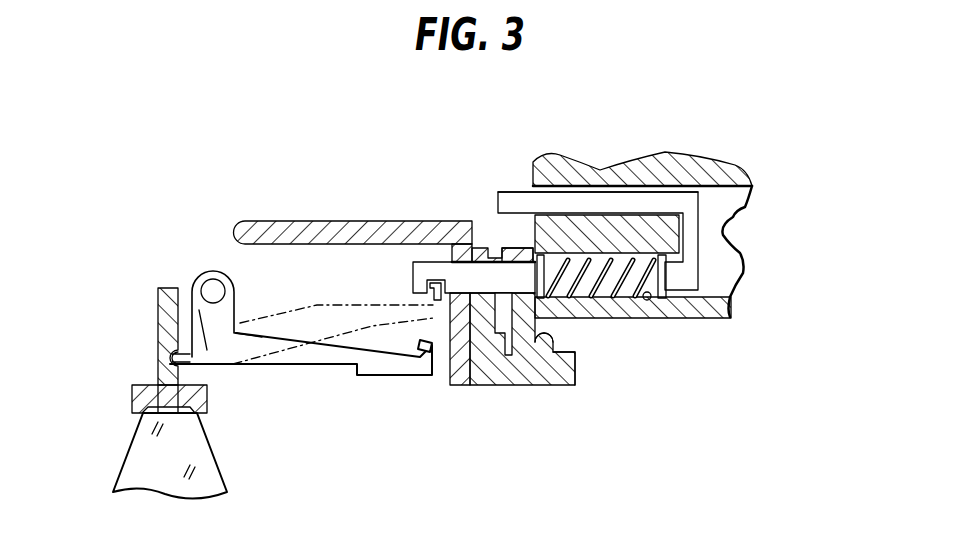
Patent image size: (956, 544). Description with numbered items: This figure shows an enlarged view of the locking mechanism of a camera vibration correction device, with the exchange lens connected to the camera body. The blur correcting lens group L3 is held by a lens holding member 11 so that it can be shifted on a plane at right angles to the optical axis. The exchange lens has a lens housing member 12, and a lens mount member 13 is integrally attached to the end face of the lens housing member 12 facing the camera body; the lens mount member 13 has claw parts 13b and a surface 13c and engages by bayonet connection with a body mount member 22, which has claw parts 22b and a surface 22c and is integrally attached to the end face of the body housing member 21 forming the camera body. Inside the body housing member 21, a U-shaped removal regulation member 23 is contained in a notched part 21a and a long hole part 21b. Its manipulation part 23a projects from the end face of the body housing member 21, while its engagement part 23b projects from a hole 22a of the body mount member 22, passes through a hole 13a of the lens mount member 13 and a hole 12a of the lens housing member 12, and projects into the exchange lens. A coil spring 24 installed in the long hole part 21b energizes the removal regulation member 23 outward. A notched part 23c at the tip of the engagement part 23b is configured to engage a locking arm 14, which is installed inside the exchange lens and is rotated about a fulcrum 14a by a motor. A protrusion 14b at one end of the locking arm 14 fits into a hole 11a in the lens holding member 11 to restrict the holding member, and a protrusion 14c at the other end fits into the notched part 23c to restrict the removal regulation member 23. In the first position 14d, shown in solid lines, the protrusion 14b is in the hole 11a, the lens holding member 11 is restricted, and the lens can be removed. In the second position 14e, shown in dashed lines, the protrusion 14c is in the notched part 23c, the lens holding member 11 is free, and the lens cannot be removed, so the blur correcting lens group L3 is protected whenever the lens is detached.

The lens holding member 11 is at (165, 298).
The hole 11a is at (162, 348).
The lens housing member 12 is at (300, 222).
The hole 12a is at (428, 378).
The lens mount member 13 is at (525, 378).
The hole 13a is at (467, 273).
The claw parts 13b is at (572, 352).
The surface 13c is at (545, 362).
The locking arm 14 is at (328, 368).
The fulcrum 14a is at (208, 283).
The protrusion 14b is at (165, 360).
The protrusion 14c is at (420, 345).
The first position 14d is at (268, 372).
The second position 14e is at (272, 318).
The body housing member 21 is at (725, 178).
The notched part 21a is at (713, 277).
The long hole part 21b is at (650, 300).
The body mount member 22 is at (488, 268).
The hole 22a is at (518, 267).
The claw parts 22b is at (500, 340).
The surface 22c is at (455, 340).
The removal regulation member 23 is at (690, 268).
The manipulation part 23a is at (515, 198).
The engagement part 23b is at (452, 262).
The notched part 23c is at (425, 286).
The coil spring 24 is at (685, 320).
The blur correcting lens group L3 is at (198, 450).